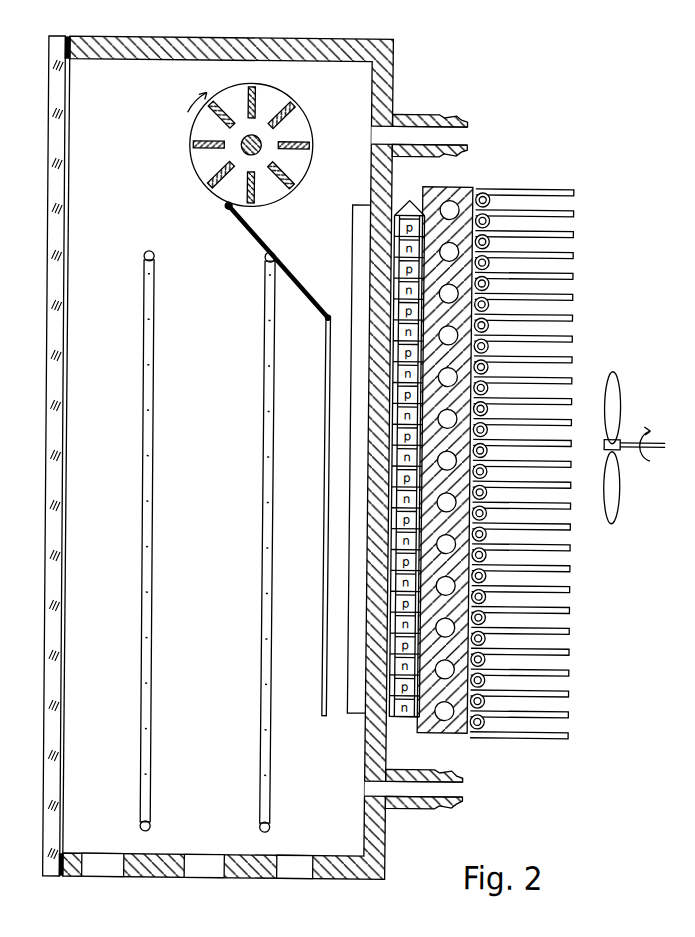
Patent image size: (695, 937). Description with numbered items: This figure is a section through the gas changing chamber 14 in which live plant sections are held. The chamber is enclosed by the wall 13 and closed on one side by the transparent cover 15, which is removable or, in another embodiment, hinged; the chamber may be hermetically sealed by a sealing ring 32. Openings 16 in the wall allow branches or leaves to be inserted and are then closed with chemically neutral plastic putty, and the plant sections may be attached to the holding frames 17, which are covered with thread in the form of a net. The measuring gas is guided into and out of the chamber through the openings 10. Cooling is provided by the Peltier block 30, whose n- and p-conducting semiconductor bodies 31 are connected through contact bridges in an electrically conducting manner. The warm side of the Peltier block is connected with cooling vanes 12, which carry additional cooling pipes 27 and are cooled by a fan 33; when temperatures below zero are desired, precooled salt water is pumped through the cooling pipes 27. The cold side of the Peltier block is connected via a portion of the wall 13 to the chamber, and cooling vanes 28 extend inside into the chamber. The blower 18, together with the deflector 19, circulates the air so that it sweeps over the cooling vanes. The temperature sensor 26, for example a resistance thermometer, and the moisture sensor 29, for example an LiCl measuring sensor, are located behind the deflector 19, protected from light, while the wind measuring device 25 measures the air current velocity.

The openings 10 is at (430, 121).
The cooling vanes 12 is at (536, 211).
The wall 13 is at (384, 832).
The gas changing chamber 14 is at (89, 121).
The transparent cover 15 is at (47, 210).
The openings 16 is at (296, 889).
The holding frames 17 is at (142, 268).
The blower 18 is at (241, 145).
The deflector 19 is at (323, 698).
The wind measuring device 25 is at (327, 298).
The temperature sensor 26 is at (295, 255).
The cooling pipes 27 is at (465, 732).
The cooling vanes 28 is at (350, 702).
The moisture sensor 29 is at (274, 227).
The Peltier block 30 is at (407, 444).
The n- and p-conducting semiconductor bodies 31 is at (398, 718).
The sealing ring 32 is at (64, 40).
The fan 33 is at (614, 382).